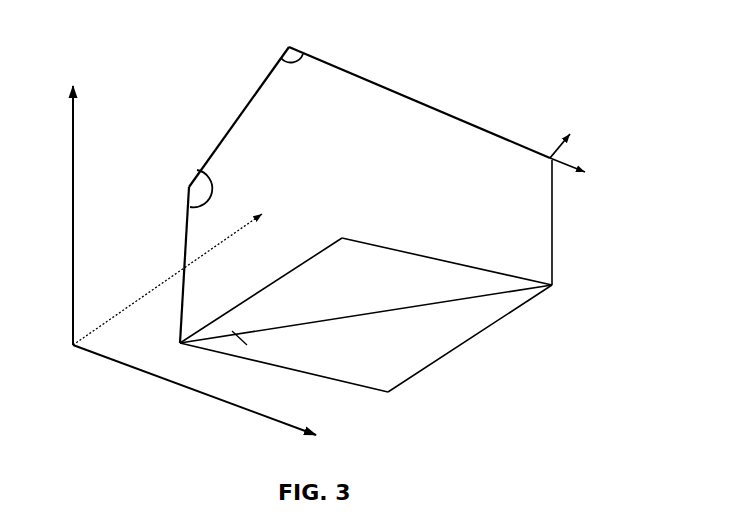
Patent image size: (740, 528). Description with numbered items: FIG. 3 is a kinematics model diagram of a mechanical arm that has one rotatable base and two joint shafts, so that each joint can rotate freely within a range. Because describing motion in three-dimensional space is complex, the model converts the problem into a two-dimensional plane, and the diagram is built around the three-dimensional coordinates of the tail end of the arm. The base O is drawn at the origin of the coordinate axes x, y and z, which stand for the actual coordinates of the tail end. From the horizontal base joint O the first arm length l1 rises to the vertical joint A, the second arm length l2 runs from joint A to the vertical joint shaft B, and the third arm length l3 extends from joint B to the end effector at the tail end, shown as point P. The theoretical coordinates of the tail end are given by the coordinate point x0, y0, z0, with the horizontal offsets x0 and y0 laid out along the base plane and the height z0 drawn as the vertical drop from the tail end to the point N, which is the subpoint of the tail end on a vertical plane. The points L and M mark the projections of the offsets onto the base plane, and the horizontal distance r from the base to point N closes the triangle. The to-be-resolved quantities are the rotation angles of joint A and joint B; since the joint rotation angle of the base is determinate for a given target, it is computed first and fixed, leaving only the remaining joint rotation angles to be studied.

The arm length between base joint O and vertical joint A l1 is at (173, 265).
The arm length between vertical joint A and vertical joint B l2 is at (239, 117).
The arm length between vertical joint B and end effector l3 is at (419, 86).
The theoretical x coordinate of tail end x0 is at (284, 375).
The theoretical y coordinate of tail end y0 is at (470, 338).
The theoretical z coordinate of tail end z0 is at (565, 222).
The horizontal distance sqrt(x0^2+y0^2) r is at (414, 298).
The base O is at (198, 322).
The joint shaft B is at (302, 31).
The end effector point P is at (567, 153).
The projection point L is at (352, 225).
The projection point M is at (397, 372).
The subpoint of the tail end on a vertical plane N is at (568, 277).
The actual x coordinate of tail end x is at (203, 394).
The actual y coordinate of tail end y is at (167, 279).
The actual z coordinate of tail end z is at (73, 206).